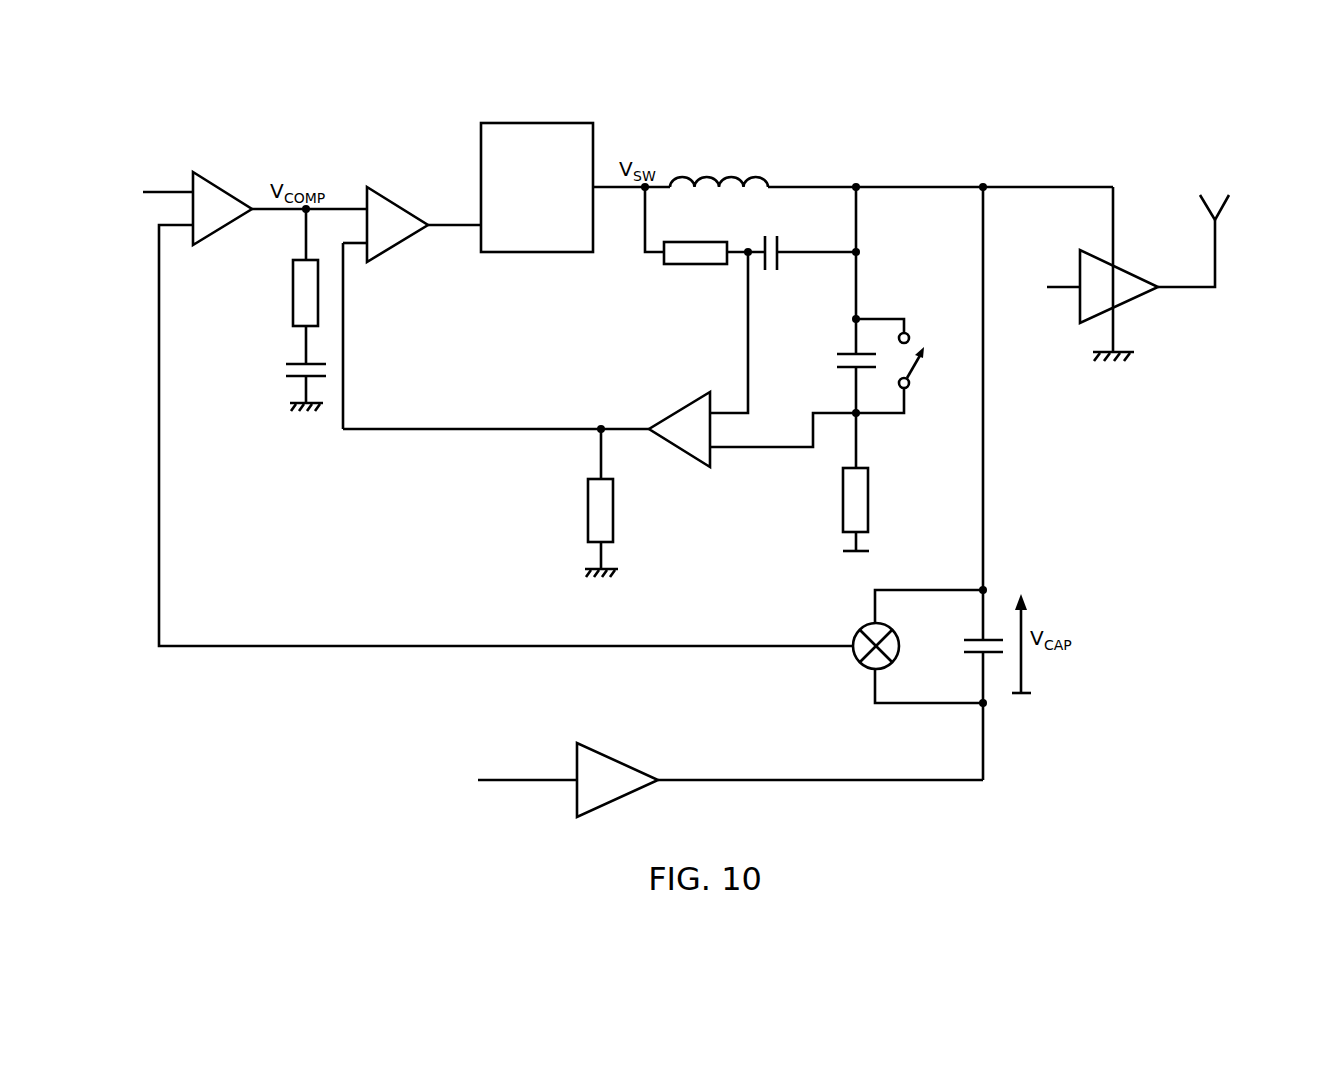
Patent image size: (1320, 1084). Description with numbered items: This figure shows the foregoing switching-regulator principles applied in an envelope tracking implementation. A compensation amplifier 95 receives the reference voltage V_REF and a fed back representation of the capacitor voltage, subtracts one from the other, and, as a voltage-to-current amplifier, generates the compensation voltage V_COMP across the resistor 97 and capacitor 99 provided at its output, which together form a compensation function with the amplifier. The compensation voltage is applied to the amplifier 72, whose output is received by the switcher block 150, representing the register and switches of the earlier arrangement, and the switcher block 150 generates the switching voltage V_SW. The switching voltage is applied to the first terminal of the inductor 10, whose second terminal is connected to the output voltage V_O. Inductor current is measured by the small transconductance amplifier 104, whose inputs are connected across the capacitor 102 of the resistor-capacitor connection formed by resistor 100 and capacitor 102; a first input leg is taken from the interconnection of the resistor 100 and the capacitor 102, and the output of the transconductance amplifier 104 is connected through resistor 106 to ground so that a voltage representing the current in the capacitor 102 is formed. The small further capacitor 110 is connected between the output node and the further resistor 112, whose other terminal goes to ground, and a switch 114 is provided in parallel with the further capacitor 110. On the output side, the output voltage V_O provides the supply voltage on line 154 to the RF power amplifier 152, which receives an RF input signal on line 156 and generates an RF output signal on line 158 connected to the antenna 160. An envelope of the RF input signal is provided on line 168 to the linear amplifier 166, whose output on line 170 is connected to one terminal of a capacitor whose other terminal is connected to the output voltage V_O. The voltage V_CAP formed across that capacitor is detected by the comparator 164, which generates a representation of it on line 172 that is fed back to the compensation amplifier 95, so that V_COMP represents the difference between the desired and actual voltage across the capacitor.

The inductor 10 is at (712, 177).
The amplifier 72 is at (399, 207).
The compensation amplifier 95 is at (212, 182).
The resistor 97 is at (292, 282).
The capacitor 99 is at (291, 362).
The resistor 100 is at (700, 266).
The capacitor 102 is at (780, 270).
The transconductance amplifier 104 is at (683, 410).
The resistor 106 is at (595, 478).
The further capacitor 110 is at (840, 368).
The further resistor 112 is at (862, 466).
The switch 114 is at (917, 368).
The switcher block 150 is at (527, 123).
The RF power amplifier 152 is at (1127, 268).
The line 154 is at (1114, 188).
The line 156 is at (1063, 286).
The line 158 is at (1192, 290).
The antenna 160 is at (1226, 206).
The comparator 164 is at (858, 626).
The linear amplifier 166 is at (606, 753).
The line 168 is at (520, 782).
The line 170 is at (810, 782).
The line 172 is at (345, 648).